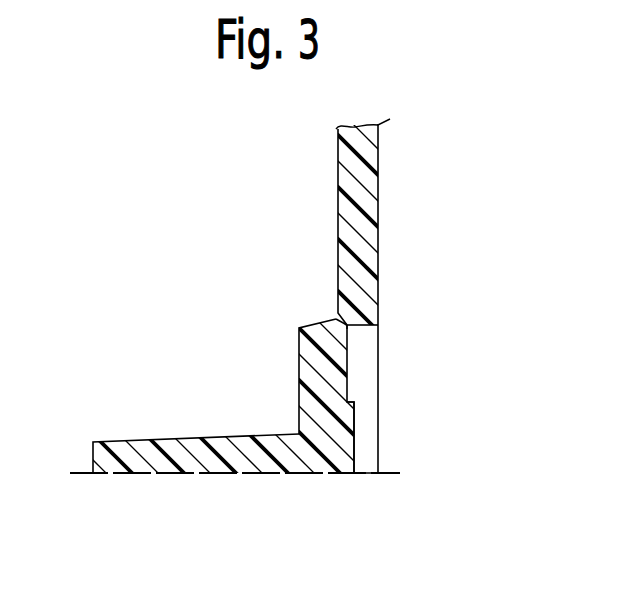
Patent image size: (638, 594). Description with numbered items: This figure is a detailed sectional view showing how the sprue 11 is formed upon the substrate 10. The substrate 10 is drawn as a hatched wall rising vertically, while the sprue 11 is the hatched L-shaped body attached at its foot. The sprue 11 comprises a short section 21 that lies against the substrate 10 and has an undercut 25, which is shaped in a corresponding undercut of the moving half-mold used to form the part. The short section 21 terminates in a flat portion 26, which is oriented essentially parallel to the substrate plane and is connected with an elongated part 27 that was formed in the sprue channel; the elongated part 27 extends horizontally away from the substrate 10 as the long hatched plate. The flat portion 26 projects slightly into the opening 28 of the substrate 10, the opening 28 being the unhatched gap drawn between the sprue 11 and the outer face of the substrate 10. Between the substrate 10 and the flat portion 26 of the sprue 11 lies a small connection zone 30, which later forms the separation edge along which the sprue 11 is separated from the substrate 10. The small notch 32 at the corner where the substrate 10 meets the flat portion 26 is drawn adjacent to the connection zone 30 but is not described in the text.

The substrate 10 is at (350, 162).
The sprue 11 is at (108, 432).
The short section 21 is at (353, 456).
The undercut 25 is at (353, 393).
The flat portion 26 is at (300, 364).
The elongated part 27 is at (195, 438).
The opening 28 is at (358, 356).
The connection zone 30 is at (346, 323).
The notch 32 is at (331, 313).